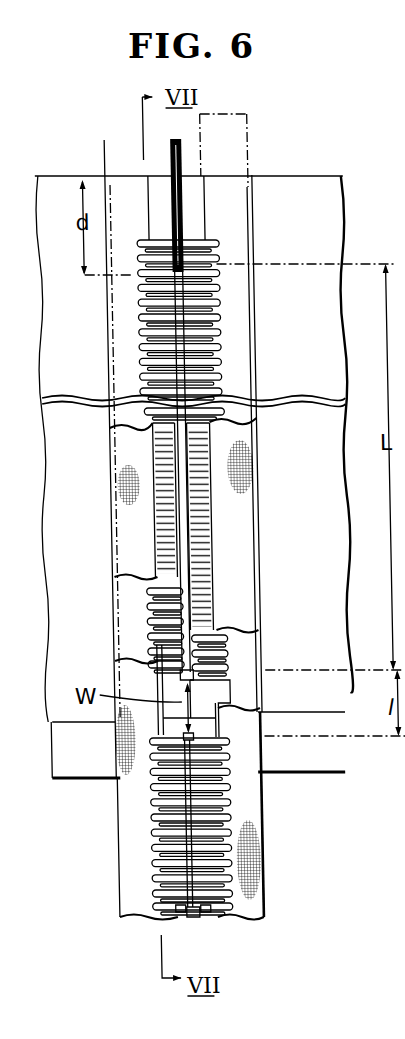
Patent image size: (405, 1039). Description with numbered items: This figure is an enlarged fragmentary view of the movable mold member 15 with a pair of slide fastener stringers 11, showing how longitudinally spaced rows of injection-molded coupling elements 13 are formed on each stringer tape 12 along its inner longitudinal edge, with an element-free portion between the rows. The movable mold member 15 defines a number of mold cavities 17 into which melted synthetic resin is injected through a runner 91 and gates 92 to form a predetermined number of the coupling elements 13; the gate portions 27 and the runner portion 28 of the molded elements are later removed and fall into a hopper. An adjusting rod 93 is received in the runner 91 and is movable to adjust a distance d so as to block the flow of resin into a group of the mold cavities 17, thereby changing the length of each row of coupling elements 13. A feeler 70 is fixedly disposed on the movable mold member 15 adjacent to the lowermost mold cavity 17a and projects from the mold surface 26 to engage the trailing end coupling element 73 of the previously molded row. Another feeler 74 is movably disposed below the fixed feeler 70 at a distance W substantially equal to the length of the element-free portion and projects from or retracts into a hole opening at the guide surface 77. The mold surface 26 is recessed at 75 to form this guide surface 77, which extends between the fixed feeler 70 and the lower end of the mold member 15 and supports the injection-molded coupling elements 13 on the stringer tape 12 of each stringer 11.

The slide fastener stringer 11 is at (112, 892).
The stringer tape 12 is at (124, 808).
The injection-molded coupling elements 13 is at (148, 848).
The movable mold member 15 is at (270, 470).
The mold cavities 17 is at (153, 362).
The lowermost mold cavity 17a is at (162, 640).
The mold surface 26 is at (126, 312).
The gate portions 27 is at (174, 913).
The runner portion 28 is at (186, 915).
The feeler 70 is at (179, 677).
The trailing end coupling element 73 is at (195, 745).
The movable feeler 74 is at (188, 737).
The recess 75 is at (218, 682).
The guide surface 77 is at (168, 728).
The runner 91 is at (182, 305).
The gates 92 is at (194, 392).
The adjusting rod 93 is at (186, 158).